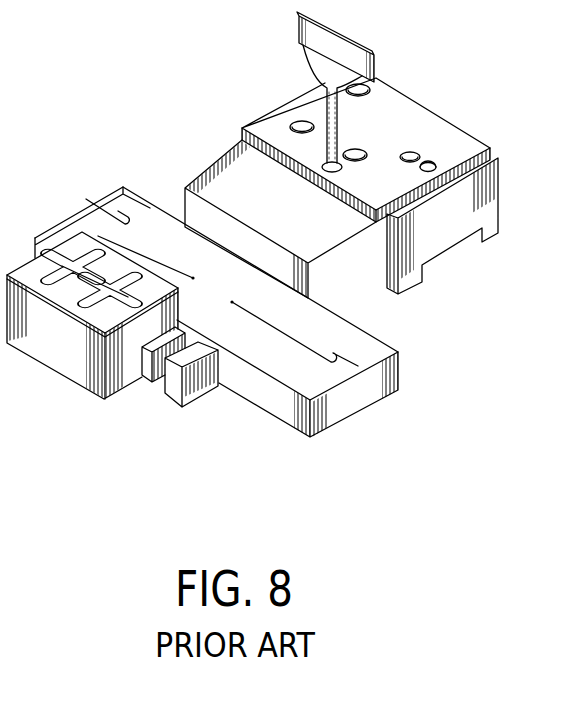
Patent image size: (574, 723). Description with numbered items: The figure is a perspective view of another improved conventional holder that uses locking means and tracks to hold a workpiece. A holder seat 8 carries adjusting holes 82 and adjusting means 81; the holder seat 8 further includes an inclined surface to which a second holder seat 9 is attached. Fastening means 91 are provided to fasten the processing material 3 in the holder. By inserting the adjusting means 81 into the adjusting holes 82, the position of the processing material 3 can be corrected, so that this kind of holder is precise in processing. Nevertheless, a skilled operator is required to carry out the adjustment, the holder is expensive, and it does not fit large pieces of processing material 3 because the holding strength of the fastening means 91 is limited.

The processing material 3 is at (61, 362).
The holder seat 8 is at (489, 207).
The adjusting means 81 is at (337, 42).
The adjusting holes 82 is at (430, 161).
The holder seat 9 is at (361, 332).
The fastening means 91 is at (200, 392).